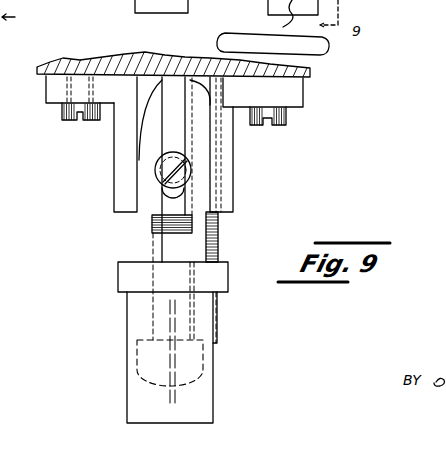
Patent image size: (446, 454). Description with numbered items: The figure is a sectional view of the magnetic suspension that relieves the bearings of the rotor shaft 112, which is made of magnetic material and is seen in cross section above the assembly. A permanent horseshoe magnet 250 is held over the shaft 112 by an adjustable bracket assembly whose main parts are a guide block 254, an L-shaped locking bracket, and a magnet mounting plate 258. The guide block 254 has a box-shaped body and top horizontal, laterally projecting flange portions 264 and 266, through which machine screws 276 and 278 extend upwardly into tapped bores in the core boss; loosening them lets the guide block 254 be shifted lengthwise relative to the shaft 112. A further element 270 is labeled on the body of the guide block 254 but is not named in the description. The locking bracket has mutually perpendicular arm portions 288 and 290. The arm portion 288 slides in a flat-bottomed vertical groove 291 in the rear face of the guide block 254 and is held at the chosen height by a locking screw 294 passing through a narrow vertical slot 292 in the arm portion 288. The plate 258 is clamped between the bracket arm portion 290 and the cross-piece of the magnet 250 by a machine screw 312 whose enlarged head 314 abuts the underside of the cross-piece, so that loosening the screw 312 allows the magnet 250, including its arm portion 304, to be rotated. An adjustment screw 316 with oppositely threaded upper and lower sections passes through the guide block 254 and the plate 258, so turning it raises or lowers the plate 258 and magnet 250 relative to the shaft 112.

The shaft 112 is at (310, 58).
The permanent horseshoe magnet 250 is at (224, 389).
The guide block 254 is at (245, 214).
The magnet mounting plate 258 is at (123, 272).
The flange portion 264 is at (304, 92).
The flange portion 266 is at (50, 87).
The left upright column 270 is at (113, 182).
The machine screw 276 is at (287, 118).
The machine screw 278 is at (72, 121).
The arm portion 288 is at (118, 216).
The arm portion 290 is at (218, 249).
The vertical groove 291 is at (139, 80).
The vertical slot 292 is at (184, 88).
The locking screw 294 is at (176, 190).
The arm portion 304 is at (135, 385).
The machine screw 312 is at (152, 220).
The enlarged head 314 is at (203, 348).
The adjustment screw 316 is at (229, 239).